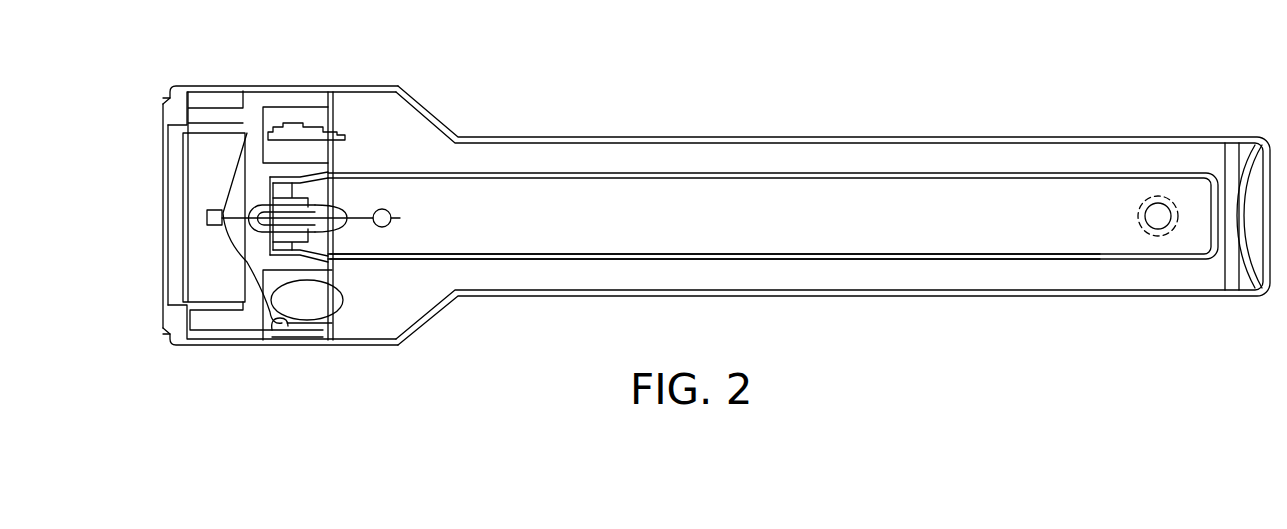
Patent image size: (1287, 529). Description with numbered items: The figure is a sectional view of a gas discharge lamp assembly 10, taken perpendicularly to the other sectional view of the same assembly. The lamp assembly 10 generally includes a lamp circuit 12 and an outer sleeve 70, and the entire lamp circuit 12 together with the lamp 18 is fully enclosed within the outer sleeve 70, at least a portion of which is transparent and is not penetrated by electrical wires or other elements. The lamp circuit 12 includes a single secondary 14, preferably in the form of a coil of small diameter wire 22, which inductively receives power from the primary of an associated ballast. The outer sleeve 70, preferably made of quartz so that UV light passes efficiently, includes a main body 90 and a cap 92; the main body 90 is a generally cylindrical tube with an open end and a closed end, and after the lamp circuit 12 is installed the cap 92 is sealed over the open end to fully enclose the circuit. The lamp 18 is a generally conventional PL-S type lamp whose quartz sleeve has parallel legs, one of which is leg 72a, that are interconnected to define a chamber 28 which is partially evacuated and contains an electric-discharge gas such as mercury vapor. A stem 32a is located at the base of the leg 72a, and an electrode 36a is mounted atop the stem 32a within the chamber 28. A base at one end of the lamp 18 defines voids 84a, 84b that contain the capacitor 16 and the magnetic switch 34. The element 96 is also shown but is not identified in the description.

The gas discharge lamp assembly 10 is at (1080, 90).
The lamp circuit 12 is at (210, 329).
The secondary 14 is at (226, 101).
The capacitor 16 is at (352, 301).
The lamp 18 is at (871, 263).
The small diameter wire 22 is at (204, 115).
The chamber 28 is at (634, 223).
The stem 32a is at (352, 207).
The magnetic switch 34 is at (352, 132).
The electrode 36a is at (391, 221).
The outer sleeve 70 is at (850, 134).
The leg 72a is at (585, 260).
The void 84a is at (272, 326).
The void 84b is at (283, 115).
The main body 90 is at (585, 137).
The cap 92 is at (176, 215).
The hinge pin 96 is at (1038, 288).